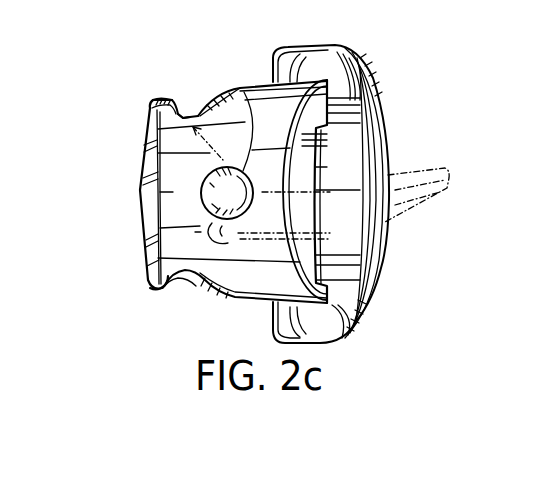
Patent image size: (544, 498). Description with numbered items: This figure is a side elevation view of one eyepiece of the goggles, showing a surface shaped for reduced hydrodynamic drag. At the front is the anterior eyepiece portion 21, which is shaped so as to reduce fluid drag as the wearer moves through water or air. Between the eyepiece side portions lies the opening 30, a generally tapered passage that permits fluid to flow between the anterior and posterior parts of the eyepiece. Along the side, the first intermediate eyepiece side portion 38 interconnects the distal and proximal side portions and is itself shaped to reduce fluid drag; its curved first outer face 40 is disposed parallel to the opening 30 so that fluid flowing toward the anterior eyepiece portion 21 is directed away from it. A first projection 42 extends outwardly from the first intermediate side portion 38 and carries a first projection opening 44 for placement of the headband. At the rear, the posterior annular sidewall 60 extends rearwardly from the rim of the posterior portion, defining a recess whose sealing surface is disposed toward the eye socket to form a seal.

The anterior eyepiece portion 21 is at (150, 142).
The opening 30 is at (192, 98).
The first intermediate eyepiece side portion 38 is at (200, 173).
The first outer face 40 is at (190, 218).
The first projection 42 is at (265, 165).
The first projection opening 44 is at (236, 168).
The posterior annular sidewall 60 is at (343, 165).